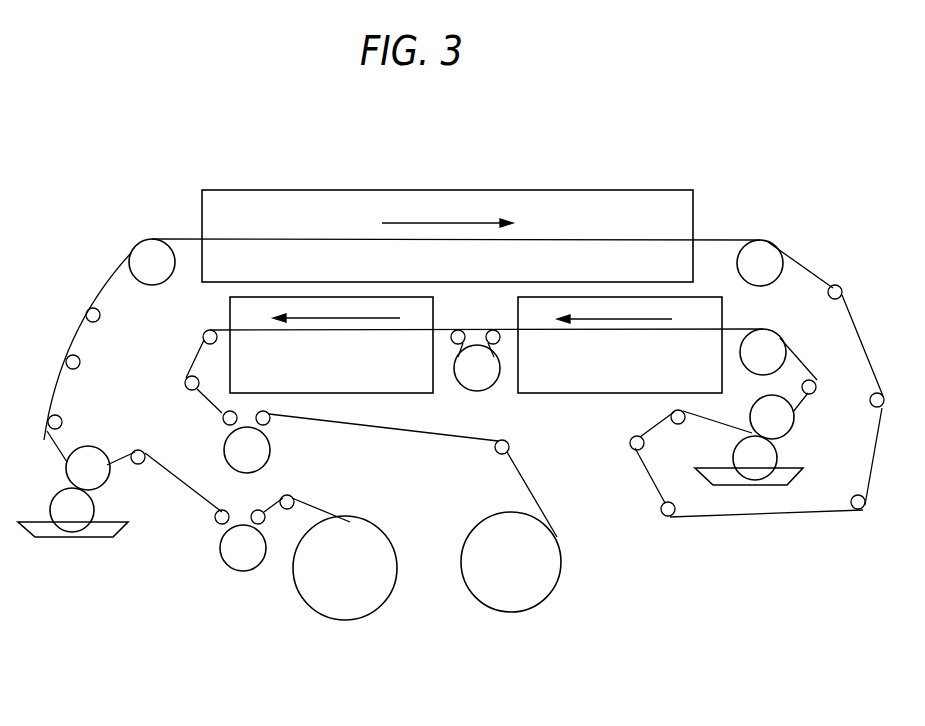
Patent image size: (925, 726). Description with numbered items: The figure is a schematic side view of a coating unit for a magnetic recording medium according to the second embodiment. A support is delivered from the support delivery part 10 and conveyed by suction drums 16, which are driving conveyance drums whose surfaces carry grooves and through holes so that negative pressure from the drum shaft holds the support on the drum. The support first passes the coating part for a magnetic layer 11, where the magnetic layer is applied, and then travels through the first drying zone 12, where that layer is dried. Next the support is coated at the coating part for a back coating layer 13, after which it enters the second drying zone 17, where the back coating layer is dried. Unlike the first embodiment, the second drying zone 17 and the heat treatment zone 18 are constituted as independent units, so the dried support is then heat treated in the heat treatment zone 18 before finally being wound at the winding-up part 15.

The support delivery part 10 is at (340, 606).
The coating part for a magnetic layer 11 is at (78, 557).
The first drying zone 12 is at (620, 190).
The coating part for a back coating layer 13 is at (800, 450).
The winding-up part 15 is at (513, 598).
The suction drum 16 is at (140, 248).
The second drying zone 17 is at (592, 395).
The heat treatment zone 18 is at (228, 298).